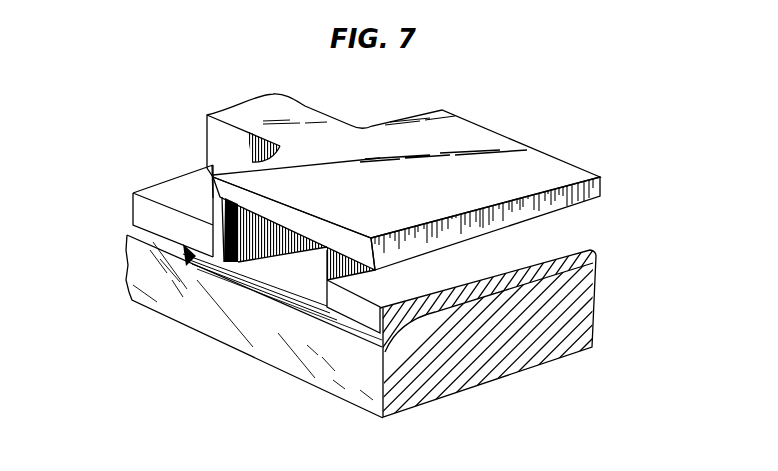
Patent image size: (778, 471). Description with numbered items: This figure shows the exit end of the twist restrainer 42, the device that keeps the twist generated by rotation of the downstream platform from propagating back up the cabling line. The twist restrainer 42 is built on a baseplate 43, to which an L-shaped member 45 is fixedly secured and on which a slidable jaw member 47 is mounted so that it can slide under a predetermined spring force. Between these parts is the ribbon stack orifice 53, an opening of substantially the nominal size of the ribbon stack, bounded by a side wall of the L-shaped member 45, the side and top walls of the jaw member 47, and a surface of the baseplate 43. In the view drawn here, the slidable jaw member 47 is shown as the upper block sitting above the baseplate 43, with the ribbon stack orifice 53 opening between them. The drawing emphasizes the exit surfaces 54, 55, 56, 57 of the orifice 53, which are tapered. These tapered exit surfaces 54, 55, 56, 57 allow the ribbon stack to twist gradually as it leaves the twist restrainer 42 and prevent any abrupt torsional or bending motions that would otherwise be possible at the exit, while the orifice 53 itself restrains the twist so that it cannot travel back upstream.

The twist restrainer 42 is at (524, 416).
The baseplate 43 is at (345, 365).
The L-shaped member 45 is at (563, 238).
The slidable jaw member 47 is at (563, 175).
The ribbon stack orifice 53 is at (250, 245).
The exit surface 54 is at (275, 283).
The exit surface 55 is at (348, 283).
The exit surface 56 is at (283, 223).
The exit surface 57 is at (222, 218).